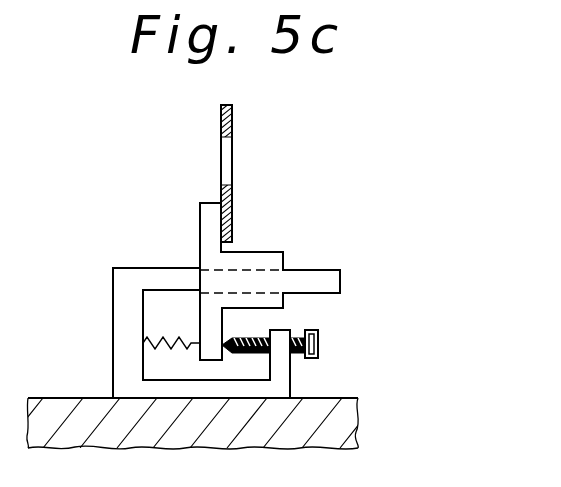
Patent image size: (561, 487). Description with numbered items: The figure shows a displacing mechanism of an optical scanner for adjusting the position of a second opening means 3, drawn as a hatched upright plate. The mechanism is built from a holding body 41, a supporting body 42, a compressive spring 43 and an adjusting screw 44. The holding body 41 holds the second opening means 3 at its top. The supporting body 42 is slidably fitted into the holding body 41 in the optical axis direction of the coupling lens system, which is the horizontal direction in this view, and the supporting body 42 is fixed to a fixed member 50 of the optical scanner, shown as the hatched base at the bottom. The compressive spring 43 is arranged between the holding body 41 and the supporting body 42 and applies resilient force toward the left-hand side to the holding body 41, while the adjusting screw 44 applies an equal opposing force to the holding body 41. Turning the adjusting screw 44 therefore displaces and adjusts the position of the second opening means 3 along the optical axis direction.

The second opening means 3 is at (233, 120).
The holding body 41 is at (268, 262).
The supporting body 42 is at (162, 276).
The compressive spring 43 is at (172, 340).
The adjusting screw 44 is at (319, 352).
The fixed member 50 is at (350, 413).